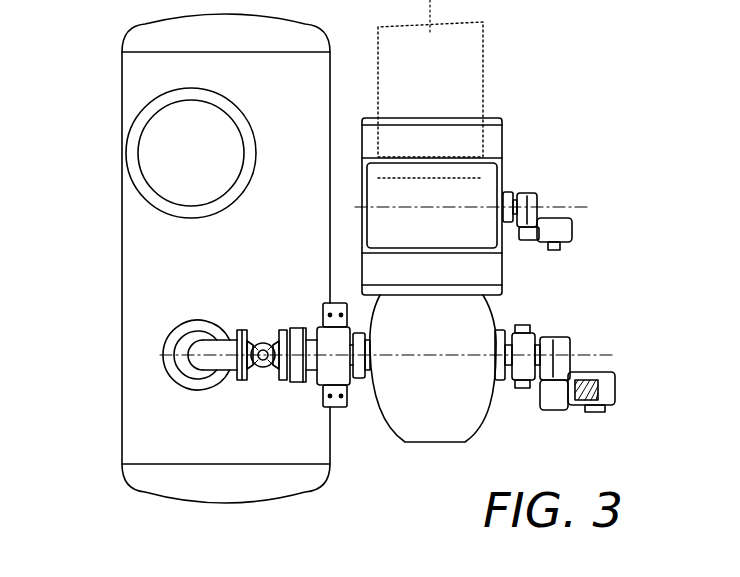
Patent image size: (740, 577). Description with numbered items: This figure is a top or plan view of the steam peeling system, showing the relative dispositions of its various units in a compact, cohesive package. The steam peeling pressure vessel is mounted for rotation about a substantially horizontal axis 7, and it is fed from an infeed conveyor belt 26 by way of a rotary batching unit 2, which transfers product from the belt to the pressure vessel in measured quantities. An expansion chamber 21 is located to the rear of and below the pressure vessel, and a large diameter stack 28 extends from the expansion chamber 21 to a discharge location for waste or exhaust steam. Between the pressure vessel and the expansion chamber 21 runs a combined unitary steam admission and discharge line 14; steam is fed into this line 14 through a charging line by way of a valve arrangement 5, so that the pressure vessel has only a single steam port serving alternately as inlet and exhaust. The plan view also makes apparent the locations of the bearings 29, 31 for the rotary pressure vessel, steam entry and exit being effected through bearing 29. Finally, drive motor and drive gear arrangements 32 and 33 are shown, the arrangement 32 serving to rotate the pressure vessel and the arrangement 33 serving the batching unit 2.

The rotary batching unit 2 is at (502, 172).
The valve arrangement 5 is at (258, 368).
The axis 7 is at (425, 357).
The combined unitary steam admission and discharge line 14 is at (296, 325).
The expansion chamber 21 is at (137, 280).
The conveyor belt 26 is at (472, 75).
The stack 28 is at (128, 175).
The bearing 29 is at (334, 373).
The bearing 31 is at (520, 347).
The drive motor and drive gear arrangement 32 is at (562, 372).
The drive motor and drive gear arrangement 33 is at (545, 207).